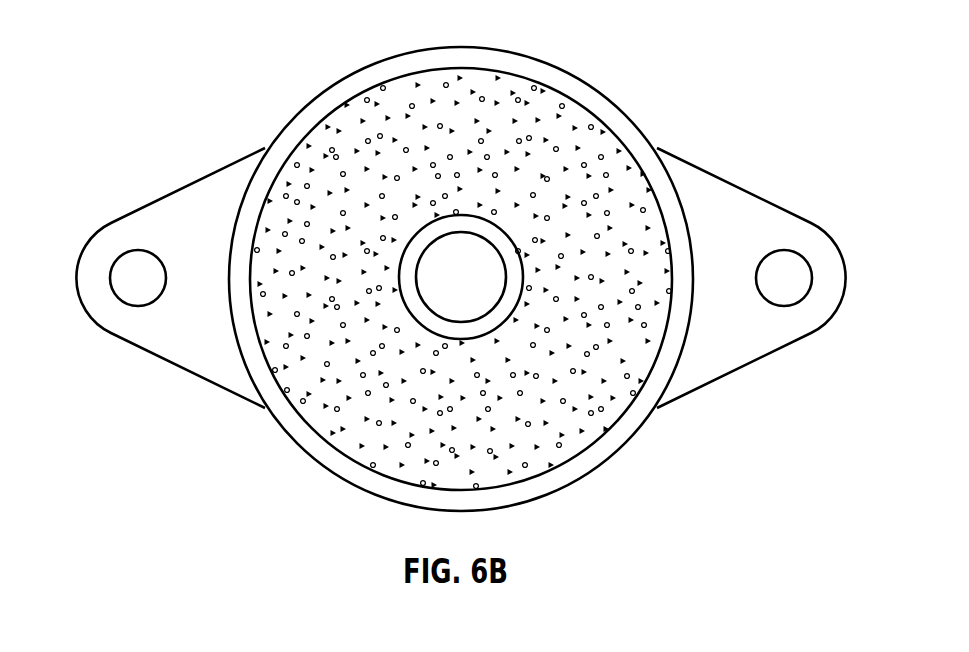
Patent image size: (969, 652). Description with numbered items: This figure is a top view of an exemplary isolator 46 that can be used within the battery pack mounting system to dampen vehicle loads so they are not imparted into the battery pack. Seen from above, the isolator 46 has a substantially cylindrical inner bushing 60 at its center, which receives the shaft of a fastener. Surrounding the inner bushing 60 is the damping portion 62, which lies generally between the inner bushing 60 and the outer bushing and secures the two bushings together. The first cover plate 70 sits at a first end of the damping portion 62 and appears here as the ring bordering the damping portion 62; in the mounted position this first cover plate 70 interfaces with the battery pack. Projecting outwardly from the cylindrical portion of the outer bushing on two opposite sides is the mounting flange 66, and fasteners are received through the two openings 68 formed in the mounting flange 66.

The isolator 46 is at (606, 43).
The inner bushing 60 is at (480, 328).
The damping portion 62 is at (521, 78).
The mounting flange 66 is at (782, 207).
The openings 68 is at (128, 280).
The first cover plate 70 is at (452, 58).